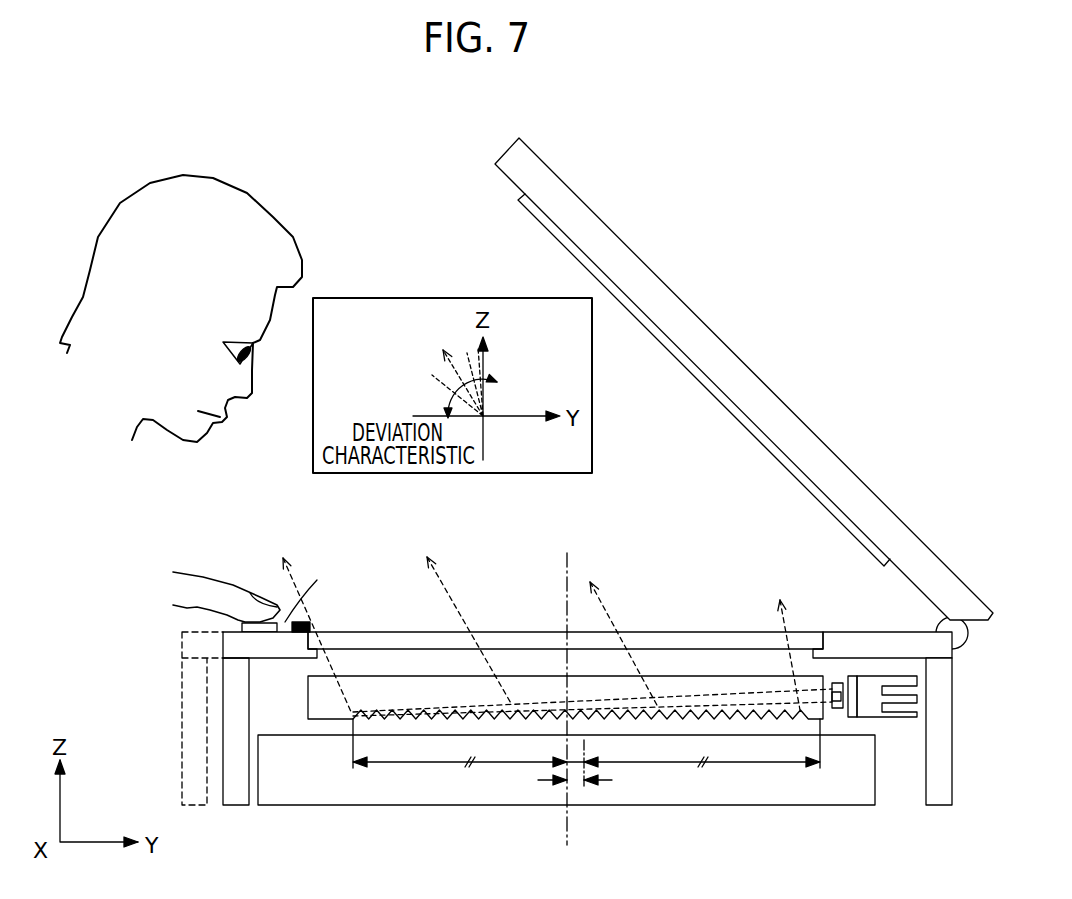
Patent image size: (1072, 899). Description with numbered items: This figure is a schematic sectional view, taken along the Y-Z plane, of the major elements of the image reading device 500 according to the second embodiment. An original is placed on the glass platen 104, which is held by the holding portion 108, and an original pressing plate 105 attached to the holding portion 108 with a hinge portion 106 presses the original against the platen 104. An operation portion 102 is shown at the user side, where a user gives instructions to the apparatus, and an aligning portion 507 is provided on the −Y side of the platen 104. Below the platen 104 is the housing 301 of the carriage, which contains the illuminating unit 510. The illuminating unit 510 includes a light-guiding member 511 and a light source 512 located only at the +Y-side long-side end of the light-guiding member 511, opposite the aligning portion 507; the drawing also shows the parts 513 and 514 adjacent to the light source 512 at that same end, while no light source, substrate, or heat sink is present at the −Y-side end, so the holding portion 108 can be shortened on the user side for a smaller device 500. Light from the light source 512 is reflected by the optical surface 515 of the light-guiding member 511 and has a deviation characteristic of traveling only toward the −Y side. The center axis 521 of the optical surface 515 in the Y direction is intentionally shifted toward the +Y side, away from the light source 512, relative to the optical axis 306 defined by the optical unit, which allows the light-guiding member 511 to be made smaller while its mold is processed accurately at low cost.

The image reading device 500 is at (667, 125).
The original pressing plate 105 is at (838, 478).
The hinge portion 106 is at (960, 638).
The holding portion 108 is at (230, 647).
The platen 104 is at (507, 640).
The operation portion 102 is at (317, 631).
The aligning portion 507 is at (308, 623).
The illuminating unit 510 is at (305, 670).
The light-guiding member 511 is at (732, 690).
The light source 512 is at (838, 709).
The substrate 513 is at (853, 718).
The connector 514 is at (910, 718).
The optical surface 515 is at (697, 719).
The center axis 521 is at (584, 788).
The housing 301 is at (458, 792).
The optical axis 306 is at (567, 840).